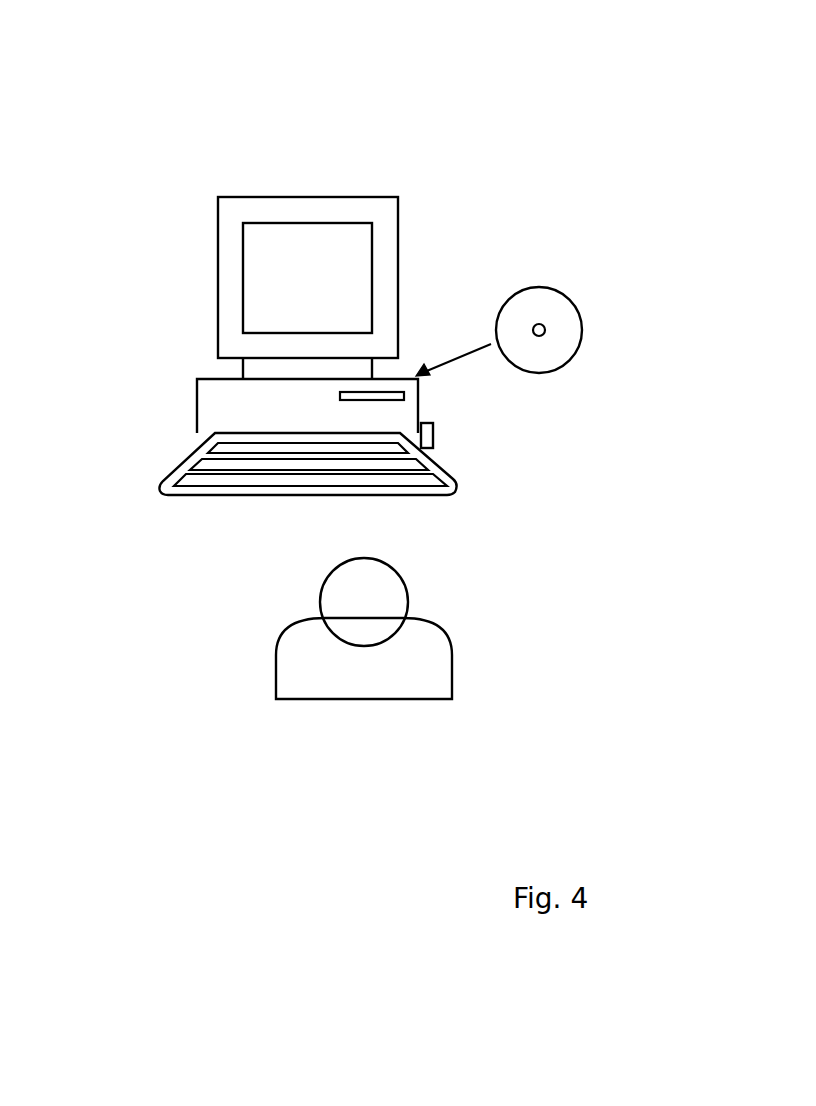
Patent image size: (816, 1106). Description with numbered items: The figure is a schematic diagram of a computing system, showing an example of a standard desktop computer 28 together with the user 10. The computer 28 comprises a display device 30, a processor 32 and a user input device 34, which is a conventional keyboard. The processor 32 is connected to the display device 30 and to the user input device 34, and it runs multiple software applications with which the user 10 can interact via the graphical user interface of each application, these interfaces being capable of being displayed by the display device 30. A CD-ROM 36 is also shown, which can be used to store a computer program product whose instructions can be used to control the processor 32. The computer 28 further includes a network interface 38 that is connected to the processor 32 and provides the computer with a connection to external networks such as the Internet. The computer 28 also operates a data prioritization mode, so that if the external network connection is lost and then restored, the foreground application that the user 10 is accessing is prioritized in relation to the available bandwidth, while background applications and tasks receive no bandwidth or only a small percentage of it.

The desktop computer 28 is at (114, 78).
The display device 30 is at (398, 222).
The processor 32 is at (197, 398).
The user input device 34 is at (160, 485).
The CD-ROM 36 is at (583, 323).
The network interface 38 is at (433, 432).
The user 10 is at (276, 670).